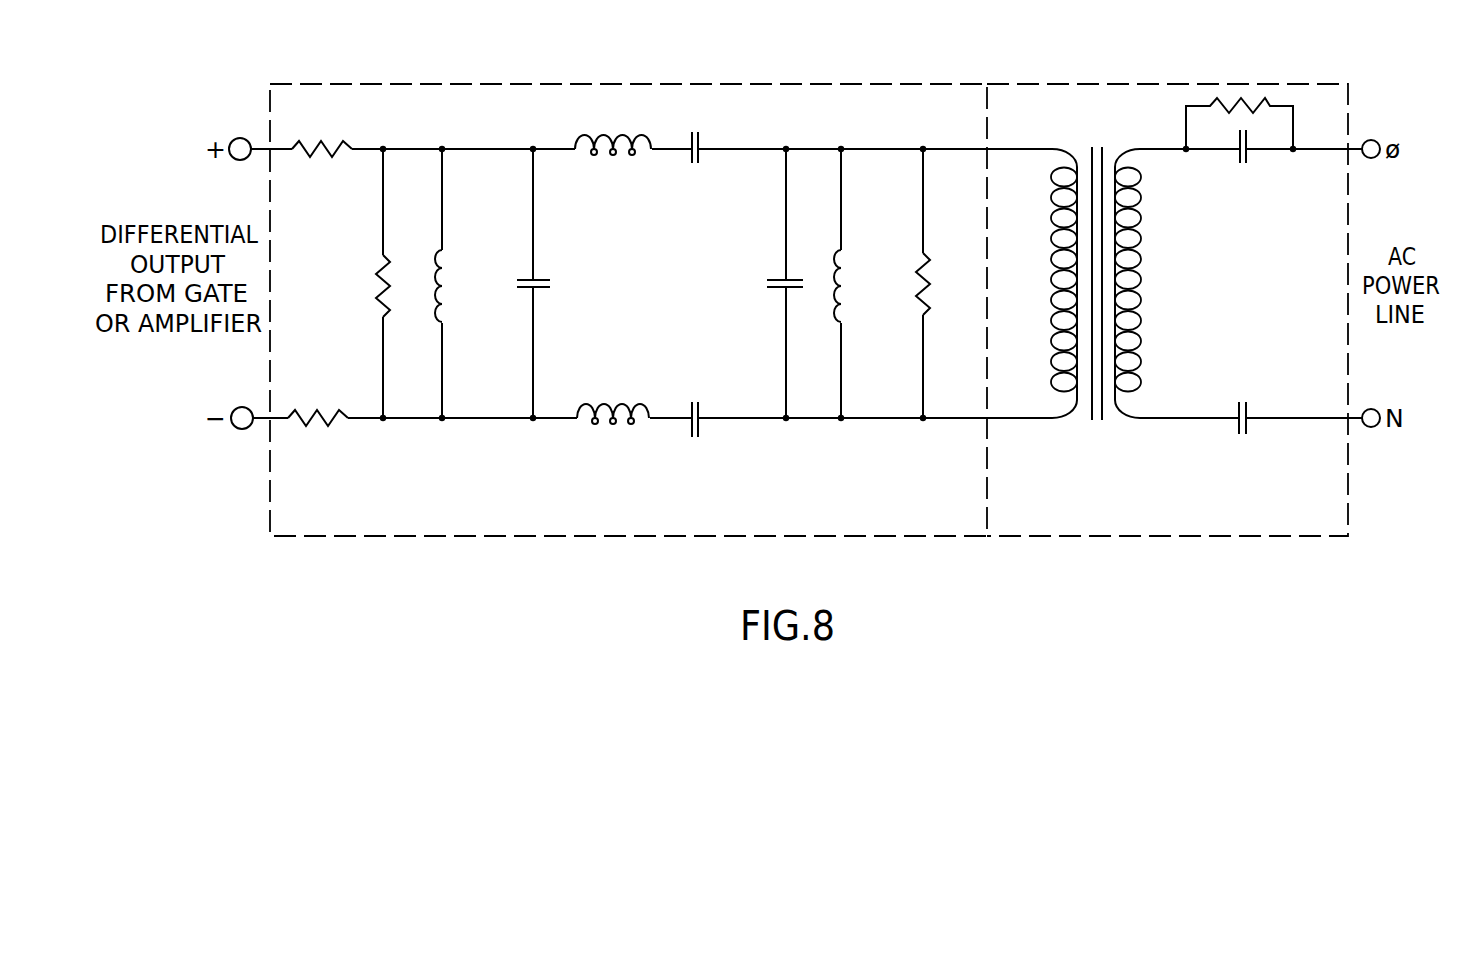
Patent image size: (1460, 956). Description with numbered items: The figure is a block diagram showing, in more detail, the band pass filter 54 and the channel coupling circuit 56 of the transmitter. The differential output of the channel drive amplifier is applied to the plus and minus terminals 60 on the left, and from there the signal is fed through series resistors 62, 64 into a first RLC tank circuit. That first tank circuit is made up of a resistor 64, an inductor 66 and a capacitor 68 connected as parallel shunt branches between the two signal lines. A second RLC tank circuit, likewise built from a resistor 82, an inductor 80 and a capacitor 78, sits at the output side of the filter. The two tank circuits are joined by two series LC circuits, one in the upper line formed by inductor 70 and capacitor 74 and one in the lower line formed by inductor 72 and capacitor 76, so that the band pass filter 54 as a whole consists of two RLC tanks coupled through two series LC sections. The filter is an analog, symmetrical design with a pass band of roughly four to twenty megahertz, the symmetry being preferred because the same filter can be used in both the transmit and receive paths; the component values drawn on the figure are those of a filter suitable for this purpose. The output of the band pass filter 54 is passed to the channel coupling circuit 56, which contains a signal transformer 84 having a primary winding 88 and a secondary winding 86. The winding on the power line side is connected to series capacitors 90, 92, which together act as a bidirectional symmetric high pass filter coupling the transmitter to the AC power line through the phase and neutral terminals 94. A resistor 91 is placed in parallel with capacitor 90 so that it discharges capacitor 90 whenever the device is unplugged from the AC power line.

The band pass filter 54 is at (387, 537).
The channel coupling circuit 56 is at (1105, 535).
The plus and minus terminals 60 is at (243, 138).
The series resistor 62 is at (325, 158).
The resistor 64 is at (392, 270).
The inductor 66 is at (448, 268).
The capacitor 68 is at (540, 280).
The inductor 70 is at (602, 135).
The inductor 72 is at (604, 405).
The capacitor 74 is at (700, 138).
The capacitor 76 is at (700, 410).
The capacitor 78 is at (797, 280).
The inductor 80 is at (848, 268).
The resistor 82 is at (930, 275).
The signal transformer 84 is at (1088, 128).
The secondary winding 86 is at (1052, 260).
The primary winding 88 is at (1133, 330).
The series capacitor 90 is at (1250, 155).
The resistor 91 is at (1240, 100).
The series capacitor 92 is at (1250, 402).
The phase and neutral terminals 94 is at (1370, 158).